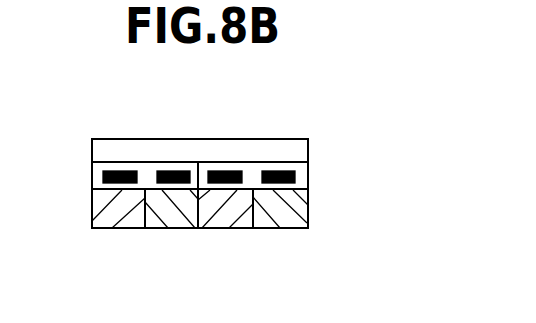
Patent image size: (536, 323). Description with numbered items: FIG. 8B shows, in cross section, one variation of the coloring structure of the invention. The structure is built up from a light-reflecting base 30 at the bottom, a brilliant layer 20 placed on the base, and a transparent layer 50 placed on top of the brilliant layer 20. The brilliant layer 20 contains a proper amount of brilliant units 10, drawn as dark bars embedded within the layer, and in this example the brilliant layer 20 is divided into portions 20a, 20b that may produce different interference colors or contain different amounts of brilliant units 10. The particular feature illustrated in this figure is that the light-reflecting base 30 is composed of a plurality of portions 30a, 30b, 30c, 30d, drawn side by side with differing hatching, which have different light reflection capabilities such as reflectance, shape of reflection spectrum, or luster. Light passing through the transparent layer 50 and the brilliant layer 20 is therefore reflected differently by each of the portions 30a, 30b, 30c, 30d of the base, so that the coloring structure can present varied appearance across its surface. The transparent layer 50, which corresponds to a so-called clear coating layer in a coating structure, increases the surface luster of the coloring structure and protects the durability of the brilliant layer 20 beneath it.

The brilliant units 10 is at (124, 171).
The brilliant layer 20 is at (308, 171).
The portion of brilliant layer 20a is at (92, 173).
The portion of brilliant layer 20b is at (298, 182).
The light-reflecting base 30 is at (307, 217).
The portion of light-reflecting base 30a is at (115, 228).
The portion of light-reflecting base 30b is at (178, 228).
The portion of light-reflecting base 30c is at (227, 228).
The portion of light-reflecting base 30d is at (282, 228).
The transparent layer 50 is at (272, 150).